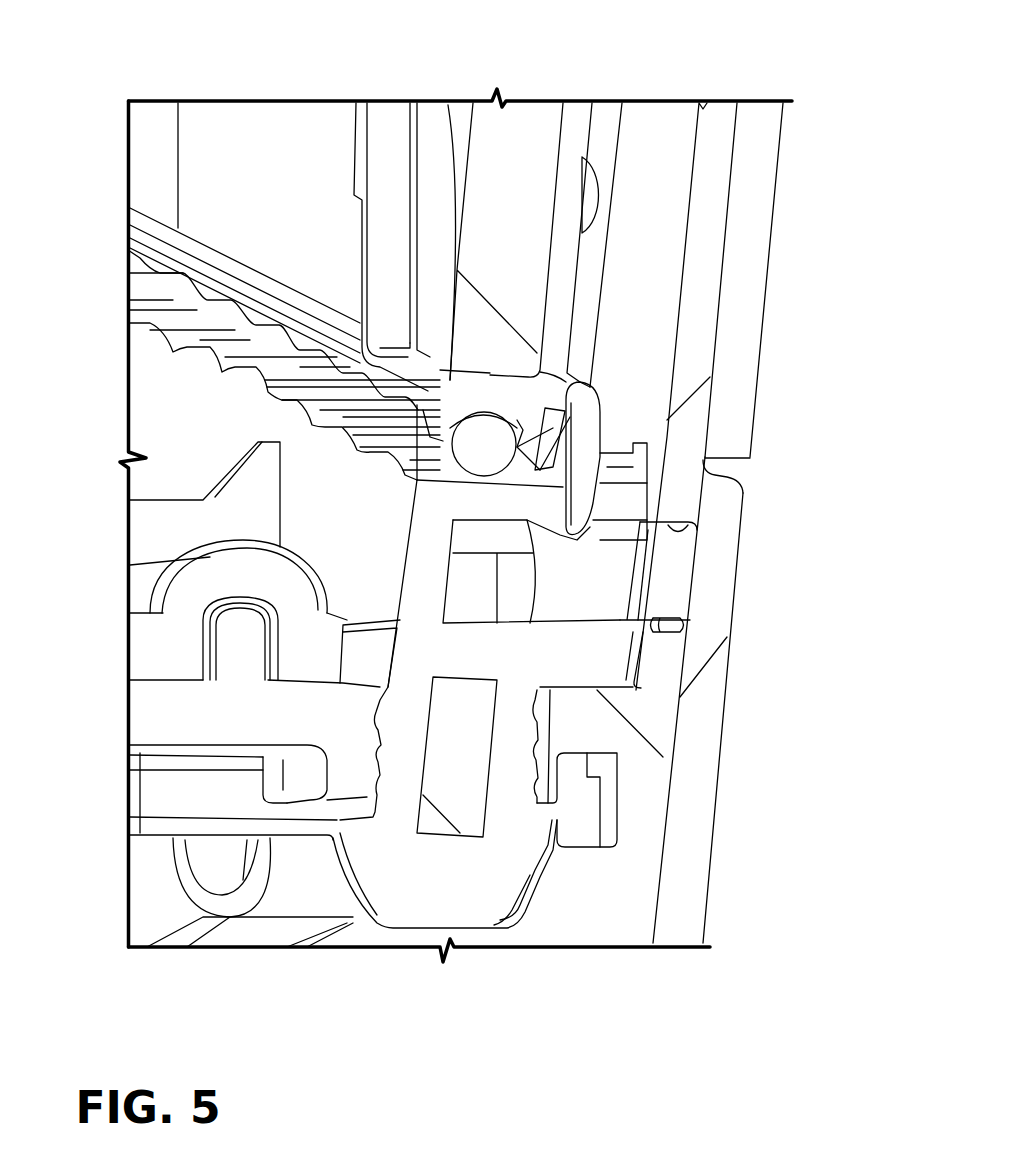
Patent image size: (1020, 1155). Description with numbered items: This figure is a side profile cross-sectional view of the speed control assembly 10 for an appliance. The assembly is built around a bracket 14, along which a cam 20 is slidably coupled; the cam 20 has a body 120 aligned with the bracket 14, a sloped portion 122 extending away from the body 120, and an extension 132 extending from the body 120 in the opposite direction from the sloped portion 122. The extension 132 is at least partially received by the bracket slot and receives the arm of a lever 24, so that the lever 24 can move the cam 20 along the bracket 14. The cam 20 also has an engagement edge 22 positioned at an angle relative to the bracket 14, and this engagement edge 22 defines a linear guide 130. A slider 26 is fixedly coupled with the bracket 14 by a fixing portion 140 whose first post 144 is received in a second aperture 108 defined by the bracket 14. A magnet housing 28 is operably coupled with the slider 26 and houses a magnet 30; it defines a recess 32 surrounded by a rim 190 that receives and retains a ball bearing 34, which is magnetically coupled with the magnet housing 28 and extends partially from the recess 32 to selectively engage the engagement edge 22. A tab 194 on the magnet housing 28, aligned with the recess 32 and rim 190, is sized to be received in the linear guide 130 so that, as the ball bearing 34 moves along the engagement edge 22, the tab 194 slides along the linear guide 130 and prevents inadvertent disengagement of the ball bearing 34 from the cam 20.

The speed control assembly 10 is at (650, 80).
The bracket 14 is at (230, 722).
The cam 20 is at (177, 537).
The engagement edge 22 is at (258, 337).
The lever 24 is at (472, 928).
The slider 26 is at (693, 303).
The magnet housing 28 is at (563, 257).
The magnet 30 is at (523, 147).
The recess 32 is at (459, 397).
The ball bearing 34 is at (487, 435).
The second aperture 108 is at (697, 625).
The body 120 is at (647, 712).
The sloped portion 122 is at (170, 417).
The linear guide 130 is at (609, 500).
The extension 132 is at (493, 867).
The fixing portion 140 is at (232, 345).
The first post 144 is at (670, 573).
The rim 190 is at (540, 423).
The tab 194 is at (593, 453).